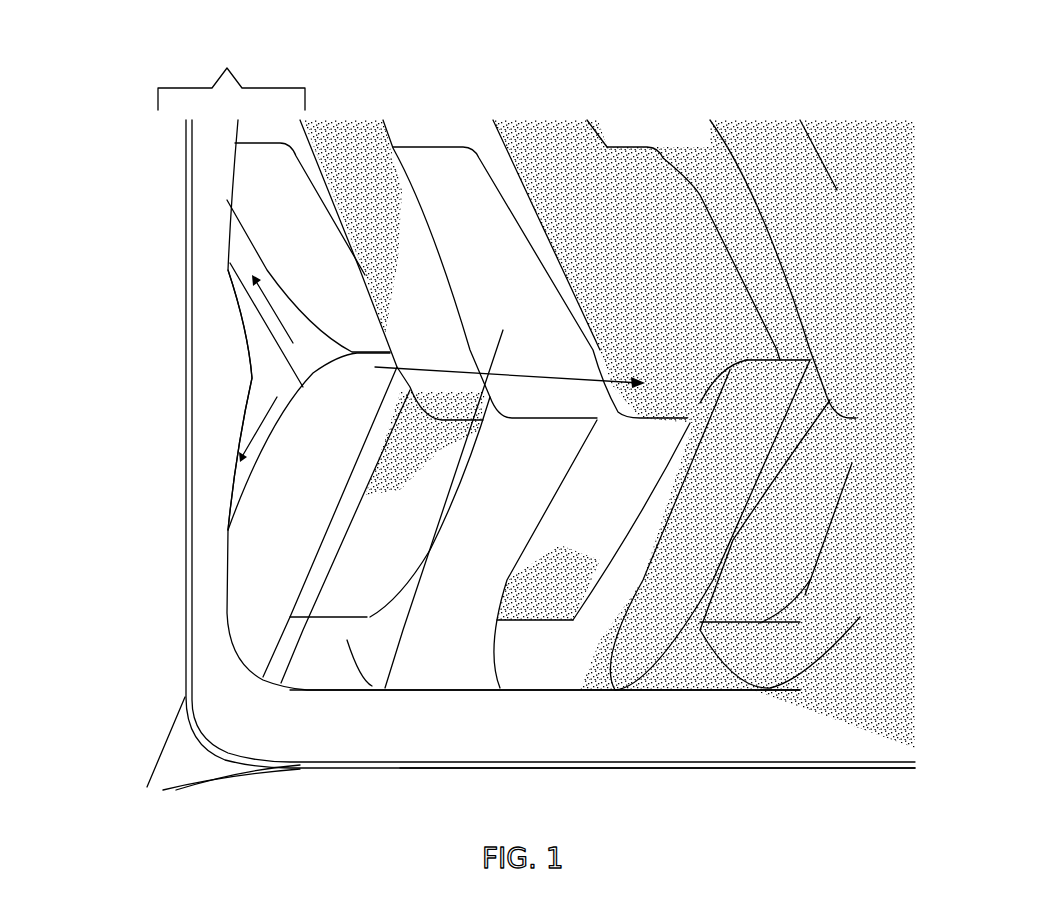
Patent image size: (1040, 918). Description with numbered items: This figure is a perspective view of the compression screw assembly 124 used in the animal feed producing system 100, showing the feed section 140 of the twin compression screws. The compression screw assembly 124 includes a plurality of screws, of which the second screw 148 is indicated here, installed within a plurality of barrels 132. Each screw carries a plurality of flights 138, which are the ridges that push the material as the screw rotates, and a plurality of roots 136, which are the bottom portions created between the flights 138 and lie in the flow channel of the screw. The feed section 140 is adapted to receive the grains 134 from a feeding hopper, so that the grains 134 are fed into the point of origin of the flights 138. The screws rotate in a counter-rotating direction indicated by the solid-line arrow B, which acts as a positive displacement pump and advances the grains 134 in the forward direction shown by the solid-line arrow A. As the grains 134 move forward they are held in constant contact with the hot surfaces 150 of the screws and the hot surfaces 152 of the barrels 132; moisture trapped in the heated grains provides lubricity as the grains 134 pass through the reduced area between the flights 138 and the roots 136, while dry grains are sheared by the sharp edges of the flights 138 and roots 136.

The system 100 is at (643, 78).
The compression screw assembly 124 is at (178, 333).
The barrels 132 is at (640, 770).
The grains 134 is at (870, 337).
The roots 136 is at (257, 173).
The flights 138 is at (393, 148).
The feed section 140 is at (231, 75).
The second screw 148 is at (265, 236).
The hot surfaces of the screws 150 is at (308, 509).
The hot surfaces of the barrels 152 is at (573, 742).